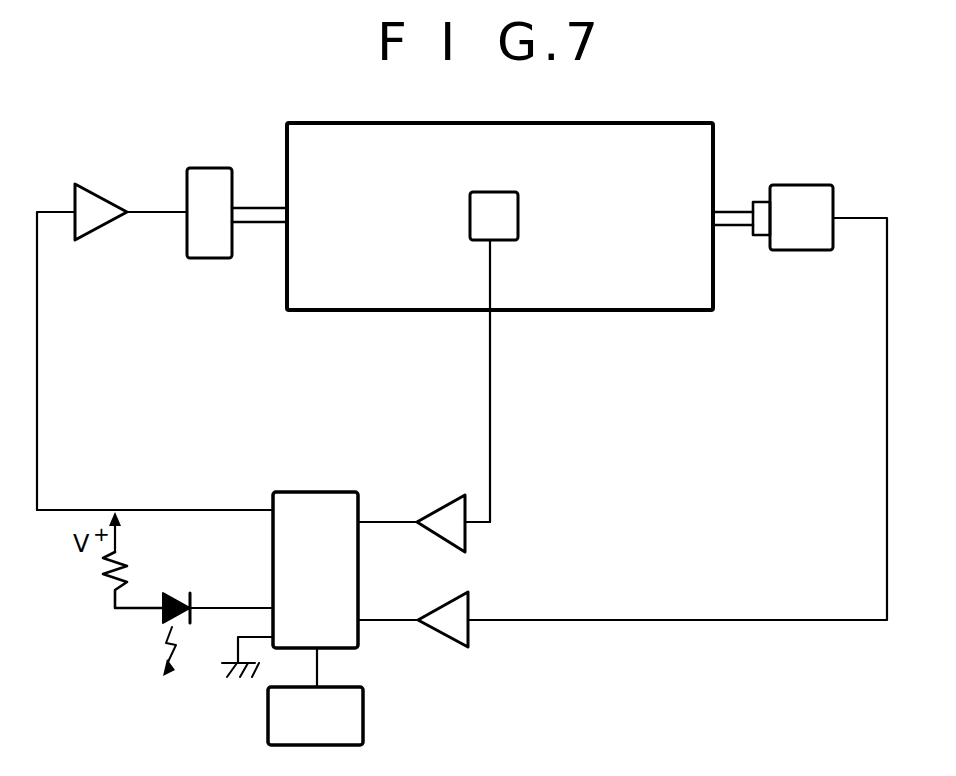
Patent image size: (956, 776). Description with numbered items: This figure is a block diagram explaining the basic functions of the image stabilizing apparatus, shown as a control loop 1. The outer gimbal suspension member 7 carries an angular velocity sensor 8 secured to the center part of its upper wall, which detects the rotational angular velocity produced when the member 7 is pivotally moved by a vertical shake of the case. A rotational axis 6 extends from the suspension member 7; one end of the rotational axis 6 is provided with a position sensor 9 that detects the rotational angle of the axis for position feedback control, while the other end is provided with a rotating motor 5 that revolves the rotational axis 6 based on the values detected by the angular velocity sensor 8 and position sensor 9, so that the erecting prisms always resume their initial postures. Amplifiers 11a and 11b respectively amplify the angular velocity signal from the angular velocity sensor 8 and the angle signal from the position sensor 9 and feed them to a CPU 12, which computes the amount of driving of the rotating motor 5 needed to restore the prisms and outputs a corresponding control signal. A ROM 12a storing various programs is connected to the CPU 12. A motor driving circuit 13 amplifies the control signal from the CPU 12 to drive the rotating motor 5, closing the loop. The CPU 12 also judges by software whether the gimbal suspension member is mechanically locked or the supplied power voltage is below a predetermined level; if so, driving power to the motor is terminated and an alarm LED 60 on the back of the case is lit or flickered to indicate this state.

The control loop 1 is at (774, 149).
The rotating motor 5 is at (213, 258).
The rotational axis 6 is at (263, 210).
The outer gimbal suspension member 7 is at (632, 122).
The angular velocity sensor 8 is at (520, 205).
The position sensor 9 is at (818, 250).
The amplifier 11a is at (443, 503).
The amplifier 11b is at (445, 606).
The CPU 12 is at (308, 492).
The ROM 12a is at (268, 713).
The motor driving circuit 13 is at (100, 230).
The alarm LED 60 is at (180, 595).